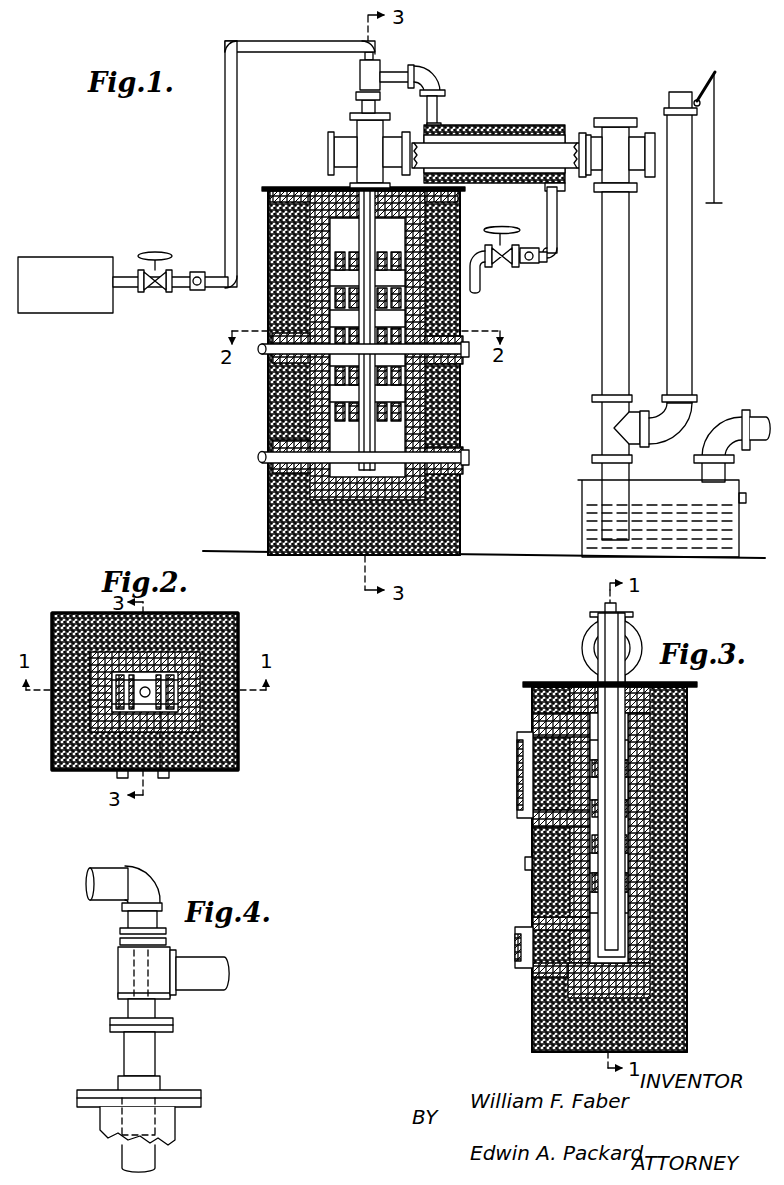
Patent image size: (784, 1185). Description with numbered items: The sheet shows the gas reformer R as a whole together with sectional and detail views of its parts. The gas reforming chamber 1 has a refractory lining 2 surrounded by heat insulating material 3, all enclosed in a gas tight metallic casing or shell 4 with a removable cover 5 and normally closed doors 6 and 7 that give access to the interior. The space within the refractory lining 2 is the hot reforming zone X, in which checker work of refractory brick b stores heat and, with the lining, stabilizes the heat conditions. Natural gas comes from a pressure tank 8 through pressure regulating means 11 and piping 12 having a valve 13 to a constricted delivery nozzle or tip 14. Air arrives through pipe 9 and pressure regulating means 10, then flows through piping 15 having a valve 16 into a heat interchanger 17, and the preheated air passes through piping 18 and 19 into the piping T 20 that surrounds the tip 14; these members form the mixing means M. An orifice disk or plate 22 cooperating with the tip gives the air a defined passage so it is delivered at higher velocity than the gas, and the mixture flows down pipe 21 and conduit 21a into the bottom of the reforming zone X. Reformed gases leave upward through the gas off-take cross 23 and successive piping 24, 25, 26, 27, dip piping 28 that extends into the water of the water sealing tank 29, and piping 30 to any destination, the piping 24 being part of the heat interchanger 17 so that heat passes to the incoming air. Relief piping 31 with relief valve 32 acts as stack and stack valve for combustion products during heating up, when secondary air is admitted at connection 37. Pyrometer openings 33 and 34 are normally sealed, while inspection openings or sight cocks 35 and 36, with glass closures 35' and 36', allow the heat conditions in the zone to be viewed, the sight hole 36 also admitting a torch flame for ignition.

In FIG. 1, the gas reforming chamber 1 is at (282, 490).
In FIG. 2, the gas reforming chamber 1 is at (232, 745).
In FIG. 3, the gas reforming chamber 1 is at (672, 916).
In FIG. 1, the refractory lining 2 is at (420, 412).
In FIG. 2, the refractory lining 2 is at (95, 725).
In FIG. 3, the refractory lining 2 is at (650, 830).
In FIG. 1, the heat insulating material 3 is at (305, 392).
In FIG. 2, the heat insulating material 3 is at (222, 642).
In FIG. 3, the heat insulating material 3 is at (545, 888).
In FIG. 1, the casing or shell 4 is at (460, 432).
In FIG. 2, the casing or shell 4 is at (212, 772).
In FIG. 3, the casing or shell 4 is at (688, 770).
In FIG. 1, the removable cover 5 is at (290, 188).
In FIG. 3, the removable cover 5 is at (541, 683).
In FIG. 3, the door 6 is at (517, 780).
In FIG. 3, the door 7 is at (515, 955).
In FIG. 1, the pressure tank 8 is at (123, 285).
In FIG. 1, the pipe 9 is at (480, 288).
In FIG. 1, the pressure regulating means 10 is at (507, 228).
In FIG. 1, the pressure regulating means 11 is at (160, 252).
In FIG. 1, the piping 12 is at (226, 166).
In FIG. 4, the piping 12 is at (98, 868).
In FIG. 1, the valve 13 is at (195, 291).
In FIG. 1, the delivery nozzle or tip 14 is at (385, 66).
In FIG. 4, the delivery nozzle or tip 14 is at (132, 975).
In FIG. 1, the piping 15 is at (558, 220).
In FIG. 1, the valve 16 is at (530, 265).
In FIG. 1, the heat interchanger 17 is at (524, 132).
In FIG. 1, the piping 18 is at (436, 78).
In FIG. 1, the piping 19 is at (412, 68).
In FIG. 4, the piping 19 is at (214, 990).
In FIG. 1, the piping T 20 is at (360, 76).
In FIG. 4, the piping T 20 is at (118, 962).
In FIG. 1, the pipe or conduit 21 is at (376, 106).
In FIG. 4, the pipe or conduit 21 is at (156, 1060).
In FIG. 1, the pipe or conduit 21a is at (360, 462).
In FIG. 2, the pipe or conduit 21a is at (152, 672).
In FIG. 3, the pipe or conduit 21a is at (614, 732).
In FIG. 4, the pipe or conduit 21a is at (160, 1156).
In FIG. 1, the orifice disk or plate 22 is at (381, 97).
In FIG. 4, the orifice disk or plate 22 is at (172, 1030).
In FIG. 1, the gas off-take cross 23 is at (328, 150).
In FIG. 3, the gas off-take cross 23 is at (592, 645).
In FIG. 4, the gas off-take cross 23 is at (100, 1115).
In FIG. 1, the piping 24 is at (548, 148).
In FIG. 1, the piping member 25 is at (618, 126).
In FIG. 1, the piping member 26 is at (603, 322).
In FIG. 1, the piping member 27 is at (603, 426).
In FIG. 1, the dip piping 28 is at (590, 492).
In FIG. 1, the water sealing tank 29 is at (662, 518).
In FIG. 1, the piping 30 is at (735, 418).
In FIG. 1, the relief piping 31 is at (692, 290).
In FIG. 1, the relief valve 32 is at (710, 76).
In FIG. 1, the pyrometer opening 33 is at (466, 356).
In FIG. 1, the pyrometer opening 34 is at (465, 465).
In FIG. 1, the inspection opening or sight cock 35 is at (241, 384).
In FIG. 1, the glass closure 35' is at (323, 365).
In FIG. 1, the inspection opening or sight cock 36 is at (234, 489).
In FIG. 1, the glass closure 36' is at (333, 466).
In FIG. 3, the connection 37 is at (525, 862).
In FIG. 1, the checker work of refractory brick b is at (338, 300).
In FIG. 2, the checker work of refractory brick b is at (176, 700).
In FIG. 3, the checker work of refractory brick b is at (622, 808).
In FIG. 1, the reforming zone X is at (335, 412).
In FIG. 1, the mixing means M is at (356, 121).
In FIG. 4, the mixing means M is at (186, 1009).
In FIG. 1, the gas reformer R is at (313, 95).